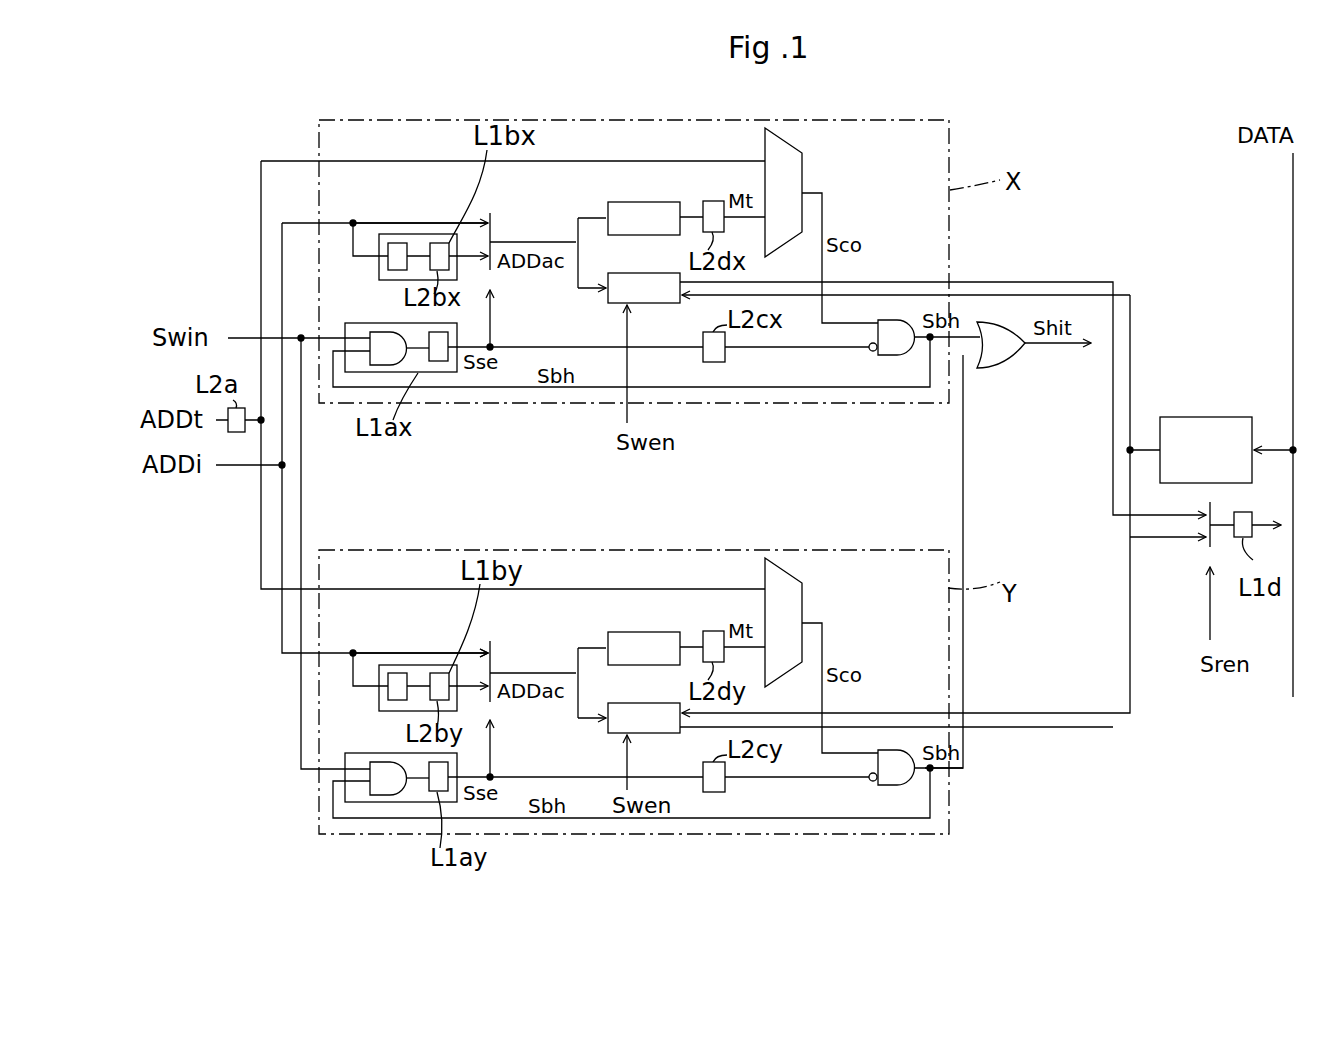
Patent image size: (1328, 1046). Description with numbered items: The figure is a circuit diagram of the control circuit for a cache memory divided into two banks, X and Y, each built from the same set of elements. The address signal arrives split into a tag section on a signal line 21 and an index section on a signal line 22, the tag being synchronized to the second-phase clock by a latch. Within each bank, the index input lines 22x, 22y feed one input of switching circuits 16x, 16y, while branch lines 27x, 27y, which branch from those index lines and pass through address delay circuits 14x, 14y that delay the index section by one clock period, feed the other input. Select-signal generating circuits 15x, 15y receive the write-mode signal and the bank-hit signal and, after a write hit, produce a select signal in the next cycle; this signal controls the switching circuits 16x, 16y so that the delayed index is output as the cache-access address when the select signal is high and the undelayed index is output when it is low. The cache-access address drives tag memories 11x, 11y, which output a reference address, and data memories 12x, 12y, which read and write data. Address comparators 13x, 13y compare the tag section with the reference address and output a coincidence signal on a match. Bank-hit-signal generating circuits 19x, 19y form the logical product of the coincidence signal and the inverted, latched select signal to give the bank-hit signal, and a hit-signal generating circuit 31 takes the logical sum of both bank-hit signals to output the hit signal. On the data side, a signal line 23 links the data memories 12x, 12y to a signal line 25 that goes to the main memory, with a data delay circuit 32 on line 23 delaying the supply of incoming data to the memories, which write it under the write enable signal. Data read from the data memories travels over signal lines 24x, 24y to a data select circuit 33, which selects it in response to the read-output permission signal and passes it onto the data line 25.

The tag memory 11x is at (622, 202).
The tag memory 11y is at (622, 632).
The data memory 12x is at (638, 304).
The data memory 12y is at (638, 734).
The address comparator 13x is at (803, 158).
The address comparator 13y is at (782, 567).
The address delay circuit 14x is at (379, 276).
The address delay circuit 14y is at (379, 708).
The select-signal generating circuit 15x is at (437, 362).
The select-signal generating circuit 15y is at (346, 779).
The switching circuit 16x is at (493, 222).
The switching circuit 16y is at (493, 660).
The bank-hit-signal generating circuit 19x is at (885, 356).
The bank-hit-signal generating circuit 19y is at (885, 786).
The signal line for inputting the tag section 21 is at (261, 530).
The signal line for inputting the index section 22 is at (282, 497).
The signal line for inputting the index section 22x is at (382, 222).
The signal line for inputting the index section 22y is at (382, 652).
The signal line 23 is at (1131, 343).
The signal line 24x is at (1050, 282).
The signal line 24y is at (1070, 727).
The signal line 25 is at (1293, 218).
The branch line 27x is at (353, 238).
The branch line 27y is at (353, 675).
The hit-signal generating circuit 31 is at (1003, 365).
The data delay circuit 32 is at (1212, 417).
The data select circuit 33 is at (1210, 530).